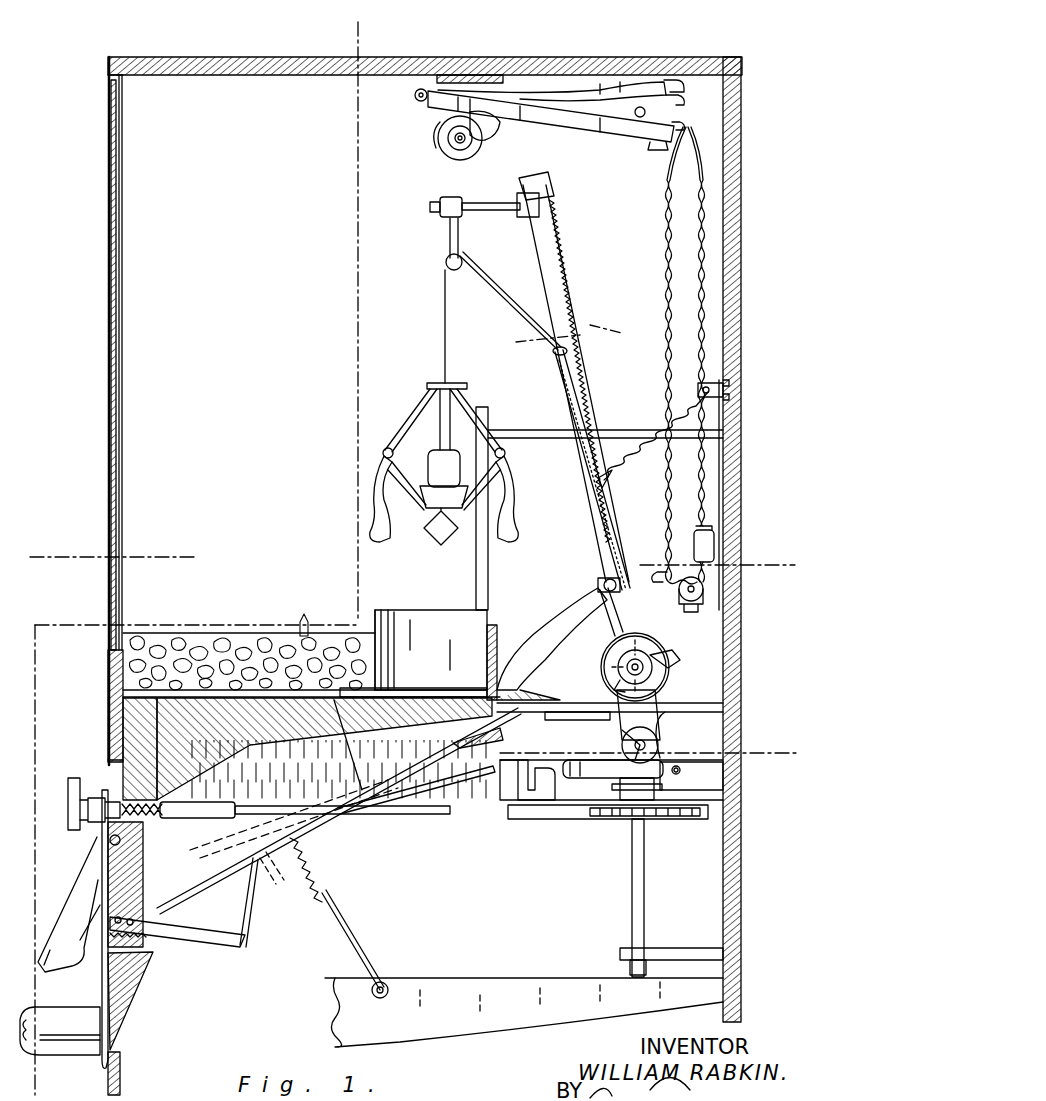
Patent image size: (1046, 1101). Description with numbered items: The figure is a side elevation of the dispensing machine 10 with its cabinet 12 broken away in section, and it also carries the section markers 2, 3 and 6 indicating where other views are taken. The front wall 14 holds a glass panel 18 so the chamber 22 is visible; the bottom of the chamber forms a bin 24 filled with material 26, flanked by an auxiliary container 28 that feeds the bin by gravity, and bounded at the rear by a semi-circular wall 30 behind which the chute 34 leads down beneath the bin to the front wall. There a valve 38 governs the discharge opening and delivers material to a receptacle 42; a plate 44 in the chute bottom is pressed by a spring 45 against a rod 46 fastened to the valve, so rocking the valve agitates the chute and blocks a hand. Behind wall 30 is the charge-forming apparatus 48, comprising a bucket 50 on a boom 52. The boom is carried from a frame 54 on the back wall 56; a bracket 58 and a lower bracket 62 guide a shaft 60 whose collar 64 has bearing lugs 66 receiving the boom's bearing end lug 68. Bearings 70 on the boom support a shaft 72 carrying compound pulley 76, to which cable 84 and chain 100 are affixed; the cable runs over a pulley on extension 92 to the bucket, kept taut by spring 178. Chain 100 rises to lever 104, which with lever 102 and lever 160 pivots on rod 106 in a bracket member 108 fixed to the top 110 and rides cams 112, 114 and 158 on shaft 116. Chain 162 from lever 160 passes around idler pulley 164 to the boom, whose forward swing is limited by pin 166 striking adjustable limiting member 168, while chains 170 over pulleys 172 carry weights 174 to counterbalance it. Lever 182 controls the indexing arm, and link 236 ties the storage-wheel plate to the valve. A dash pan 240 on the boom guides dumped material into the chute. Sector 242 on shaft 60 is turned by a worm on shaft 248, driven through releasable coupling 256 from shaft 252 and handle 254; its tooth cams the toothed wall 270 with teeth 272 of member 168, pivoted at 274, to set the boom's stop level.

The dispensing machine 10 is at (100, 384).
The cabinet 12 is at (107, 486).
The front wall 14 is at (115, 703).
The glass panel 18 is at (117, 262).
The chamber 22 is at (172, 158).
The bin 24 is at (259, 596).
The material 26 is at (222, 634).
The auxiliary container 28 is at (502, 578).
The semi-circular wall 30 is at (390, 607).
The chute 34 is at (449, 768).
The valve 38 is at (55, 950).
The receptacle 42 is at (63, 1064).
The plate 44 is at (276, 882).
The spring 45 is at (332, 863).
The rod 46 is at (248, 934).
The charge-forming apparatus 48 is at (339, 422).
The bucket 50 is at (374, 508).
The boom 52 is at (520, 255).
The frame 54 is at (730, 772).
The back wall 56 is at (742, 683).
The bracket 58 is at (695, 765).
The shaft 60 is at (644, 888).
The bracket 62 is at (670, 956).
The collar 64 is at (656, 800).
The bearing lugs 66 is at (650, 740).
The bearing end lug 68 is at (625, 742).
The bearings 70 is at (662, 660).
The shaft 72 is at (654, 672).
The compound pulley 76 is at (648, 673).
The cable 84 is at (526, 316).
The extension 92 is at (486, 200).
The chain 100 is at (668, 272).
The lever 102 is at (578, 95).
The lever 104 is at (560, 118).
The rod 106 is at (416, 95).
The bracket member 108 is at (452, 75).
The top 110 is at (196, 60).
The cam 112 is at (500, 118).
The cam 114 is at (440, 140).
The shaft 116 is at (460, 144).
The cam 158 is at (486, 130).
The lever 160 is at (636, 118).
The chain 162 is at (716, 546).
The idler pulley 164 is at (702, 592).
The pin 166 is at (556, 720).
The adjustable limiting member 168 is at (538, 812).
The chains 170 is at (656, 432).
The pulleys 172 is at (722, 390).
The weights 174 is at (736, 500).
The spring 178 is at (586, 310).
The lever 182 is at (660, 82).
The link 236 is at (400, 802).
The dash pan 240 is at (552, 636).
The sector 242 is at (557, 828).
The shaft 248 is at (446, 815).
The shaft 252 is at (138, 806).
The handle 254 is at (72, 780).
The releasable coupling 256 is at (222, 801).
The wall 270 is at (597, 770).
The teeth 272 is at (506, 818).
The pivot 274 is at (682, 772).
The section line 2 is at (358, 30).
The section line 3 is at (791, 554).
The section line 6 is at (802, 791).